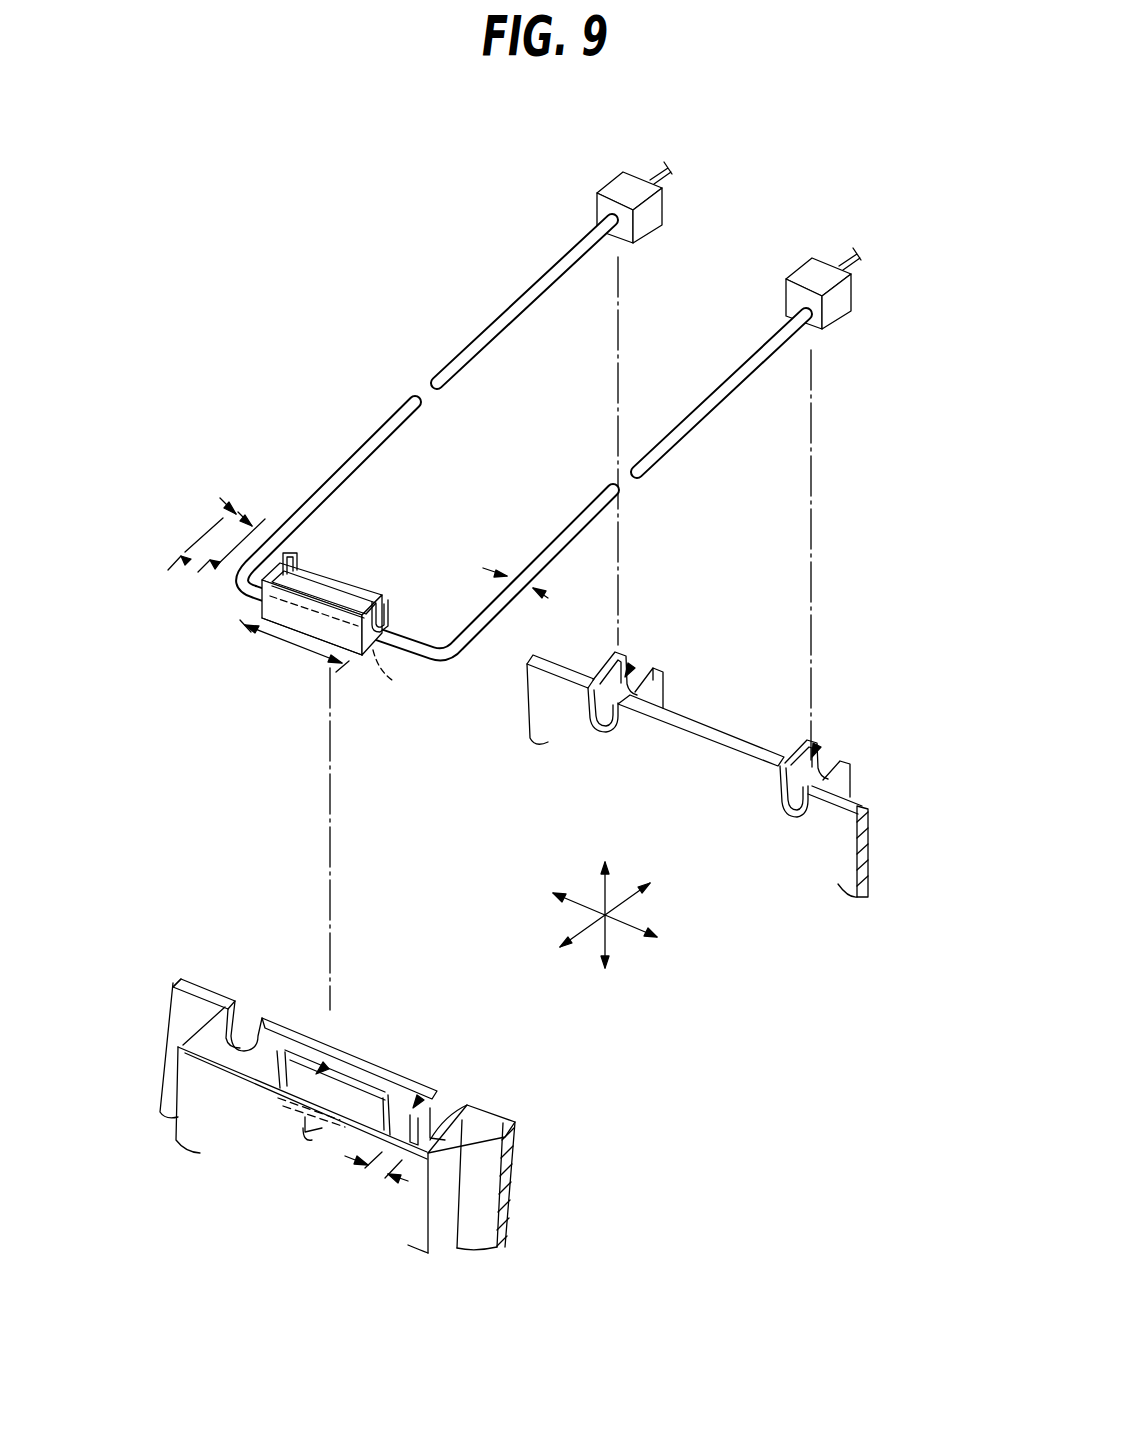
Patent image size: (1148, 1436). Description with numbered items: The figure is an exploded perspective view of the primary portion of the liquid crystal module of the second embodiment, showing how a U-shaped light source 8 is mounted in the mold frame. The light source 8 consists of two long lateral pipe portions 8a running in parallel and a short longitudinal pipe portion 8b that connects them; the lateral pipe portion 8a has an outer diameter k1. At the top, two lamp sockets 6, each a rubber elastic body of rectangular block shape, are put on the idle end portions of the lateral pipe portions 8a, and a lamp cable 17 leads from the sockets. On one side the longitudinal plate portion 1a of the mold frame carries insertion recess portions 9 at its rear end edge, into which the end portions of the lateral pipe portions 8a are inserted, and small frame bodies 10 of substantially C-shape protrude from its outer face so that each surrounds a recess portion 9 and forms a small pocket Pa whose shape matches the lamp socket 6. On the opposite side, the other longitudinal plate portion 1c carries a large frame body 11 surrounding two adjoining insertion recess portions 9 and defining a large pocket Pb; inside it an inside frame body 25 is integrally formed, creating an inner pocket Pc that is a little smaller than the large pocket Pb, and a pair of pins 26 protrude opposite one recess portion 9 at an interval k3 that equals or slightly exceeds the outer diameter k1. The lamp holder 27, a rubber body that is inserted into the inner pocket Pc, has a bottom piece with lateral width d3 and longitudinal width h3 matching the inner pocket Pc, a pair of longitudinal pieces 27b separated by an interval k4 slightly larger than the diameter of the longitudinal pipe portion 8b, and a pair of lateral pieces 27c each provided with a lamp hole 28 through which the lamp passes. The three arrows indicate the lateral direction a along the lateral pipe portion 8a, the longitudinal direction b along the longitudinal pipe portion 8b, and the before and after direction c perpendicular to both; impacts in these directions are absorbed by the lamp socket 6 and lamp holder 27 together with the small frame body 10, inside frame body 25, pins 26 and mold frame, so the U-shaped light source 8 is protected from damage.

The lamp socket 6 is at (790, 302).
The lamp cable 17 is at (843, 266).
The U-shaped light source 8 is at (468, 342).
The lateral pipe portion 8a is at (413, 412).
The longitudinal pipe portion 8b is at (248, 585).
The lamp holder 27 is at (355, 576).
The longitudinal piece 27b is at (370, 590).
The lateral piece 27c is at (300, 558).
The lamp hole 28 is at (400, 677).
The lateral width of the bottom piece d3 is at (216, 534).
The interval between the longitudinal pieces k4 is at (252, 526).
The longitudinal width of the bottom piece h3 is at (294, 650).
The outer diameter of the pipe portion k1 is at (540, 594).
The longitudinal plate portion 1a is at (705, 732).
The insertion recess portion 9 is at (597, 730).
The small frame body 10 is at (600, 667).
The small pocket Pa is at (631, 666).
The lateral direction a is at (597, 930).
The longitudinal direction b is at (594, 907).
The before and after direction c is at (602, 900).
The longitudinal plate portion 1c is at (205, 995).
The inside frame body 25 is at (380, 1074).
The inner pocket Pc is at (326, 1066).
The large pocket Pb is at (420, 1098).
The interval between the pins k3 is at (380, 1168).
The large frame body 11 is at (440, 1197).
The pin 26 is at (447, 1127).